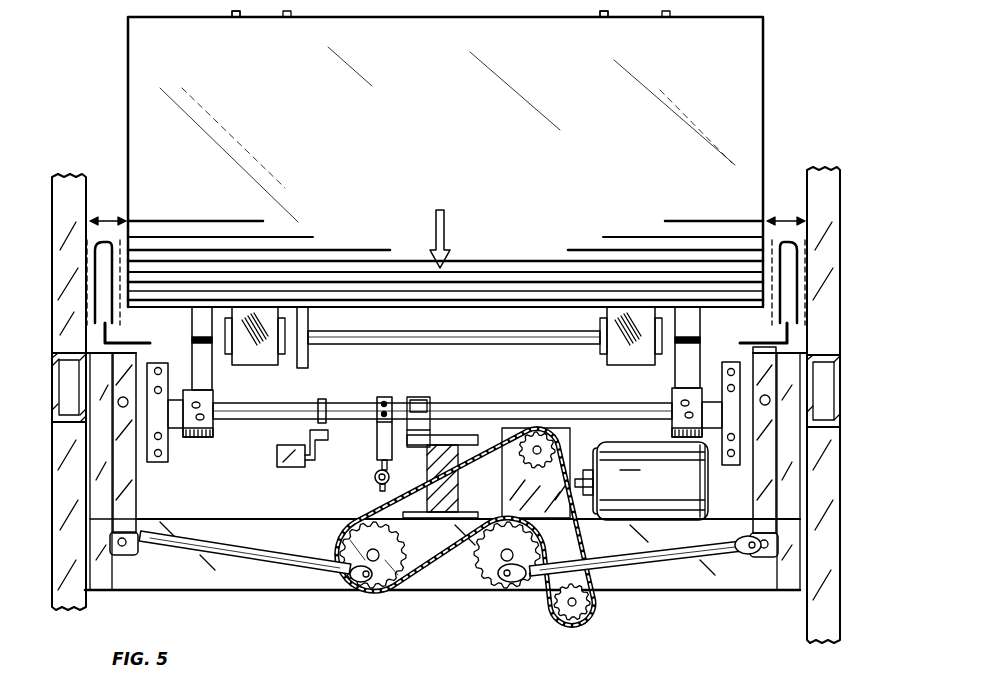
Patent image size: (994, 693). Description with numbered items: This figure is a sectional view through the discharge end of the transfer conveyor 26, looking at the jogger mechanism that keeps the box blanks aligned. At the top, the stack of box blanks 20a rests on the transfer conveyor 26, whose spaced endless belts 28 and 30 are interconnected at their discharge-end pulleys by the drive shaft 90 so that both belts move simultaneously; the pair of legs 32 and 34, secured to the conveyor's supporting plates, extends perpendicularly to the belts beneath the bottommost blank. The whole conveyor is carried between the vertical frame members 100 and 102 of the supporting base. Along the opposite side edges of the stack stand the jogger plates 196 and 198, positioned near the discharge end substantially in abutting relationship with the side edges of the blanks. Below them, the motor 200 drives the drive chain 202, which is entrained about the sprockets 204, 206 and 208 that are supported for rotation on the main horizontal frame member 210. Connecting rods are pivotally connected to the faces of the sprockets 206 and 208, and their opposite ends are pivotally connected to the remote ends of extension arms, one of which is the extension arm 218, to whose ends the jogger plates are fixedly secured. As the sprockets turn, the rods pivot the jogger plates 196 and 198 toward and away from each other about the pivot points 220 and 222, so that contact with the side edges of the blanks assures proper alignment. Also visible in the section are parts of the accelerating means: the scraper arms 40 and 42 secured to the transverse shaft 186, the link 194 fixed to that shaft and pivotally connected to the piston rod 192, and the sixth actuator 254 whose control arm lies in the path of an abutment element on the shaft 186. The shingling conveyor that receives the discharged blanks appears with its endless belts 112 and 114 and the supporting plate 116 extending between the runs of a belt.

The stack of box blanks 20a is at (763, 112).
The leg 32 is at (238, 12).
The leg 34 is at (602, 12).
The vertical frame member 100 is at (53, 180).
The vertical frame member 102 is at (822, 192).
The jogger plate 196 is at (128, 230).
The jogger plate 198 is at (768, 237).
The scraper arm 40 is at (198, 331).
The scraper arm 42 is at (700, 338).
The transfer conveyor 26 is at (240, 366).
The belt 28 is at (302, 368).
The belt 30 is at (633, 366).
The drive shaft 90 is at (353, 340).
The transverse shaft 186 is at (337, 407).
The link 194 is at (377, 454).
The piston rod 192 is at (378, 474).
The sixth actuator 254 is at (268, 459).
The supporting plate 116 is at (137, 497).
The belt 114 is at (632, 561).
The pivot point 220 is at (118, 402).
The pivot point 222 is at (770, 400).
The extension arm 218 is at (752, 506).
The drive chain 202 is at (413, 586).
The sprocket 204 is at (540, 431).
The sprocket 206 is at (348, 541).
The sprocket 208 is at (507, 596).
The belt 112 is at (274, 563).
The main horizontal frame member 210 is at (659, 584).
The motor 200 is at (680, 506).